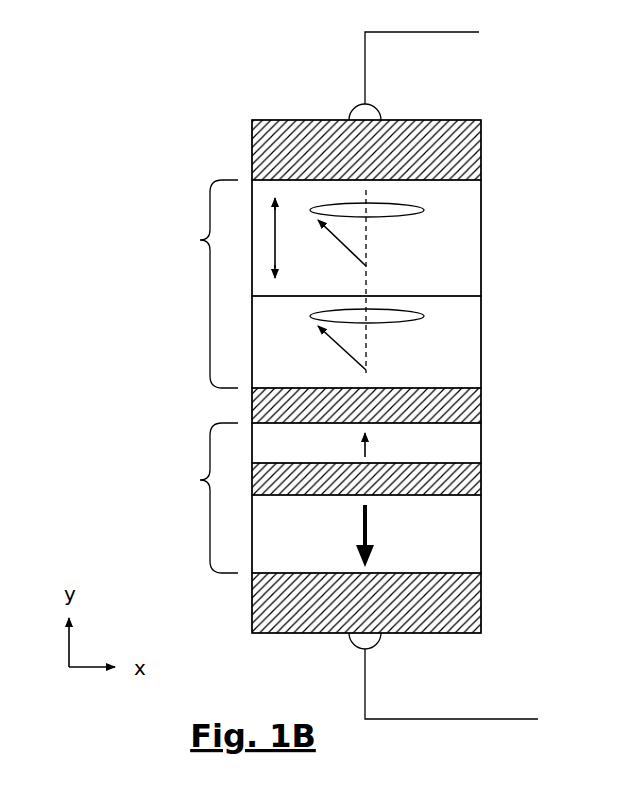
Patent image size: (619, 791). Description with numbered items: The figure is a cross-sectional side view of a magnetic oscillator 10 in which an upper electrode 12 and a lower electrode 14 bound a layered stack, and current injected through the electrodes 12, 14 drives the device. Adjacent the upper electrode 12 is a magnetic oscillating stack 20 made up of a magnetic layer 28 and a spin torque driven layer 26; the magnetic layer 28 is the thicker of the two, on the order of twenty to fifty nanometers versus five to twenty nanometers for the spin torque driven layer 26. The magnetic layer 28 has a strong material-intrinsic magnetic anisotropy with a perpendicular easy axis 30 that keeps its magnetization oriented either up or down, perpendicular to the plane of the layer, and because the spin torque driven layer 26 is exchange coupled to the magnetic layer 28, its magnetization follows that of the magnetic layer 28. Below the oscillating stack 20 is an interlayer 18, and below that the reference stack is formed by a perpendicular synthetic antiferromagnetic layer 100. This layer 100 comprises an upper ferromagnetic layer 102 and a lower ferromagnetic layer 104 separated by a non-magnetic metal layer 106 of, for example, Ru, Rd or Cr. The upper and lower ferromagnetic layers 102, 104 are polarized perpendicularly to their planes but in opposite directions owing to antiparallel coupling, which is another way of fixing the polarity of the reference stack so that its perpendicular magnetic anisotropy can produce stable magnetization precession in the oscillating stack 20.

The magnetic oscillator 10 is at (540, 48).
The upper electrode 12 is at (483, 145).
The lower electrode 14 is at (482, 603).
The interlayer 18 is at (482, 403).
The magnetic oscillating stack 20 is at (199, 284).
The spin torque driven layer 26 is at (482, 338).
The magnetic layer 28 is at (482, 235).
The perpendicular easy axis 30 is at (275, 217).
The perpendicular synthetic antiferromagnetic layer 100 is at (193, 498).
The upper ferromagnetic layer 102 is at (482, 442).
The lower ferromagnetic layer 104 is at (482, 530).
The non-magnetic metal layer 106 is at (482, 478).